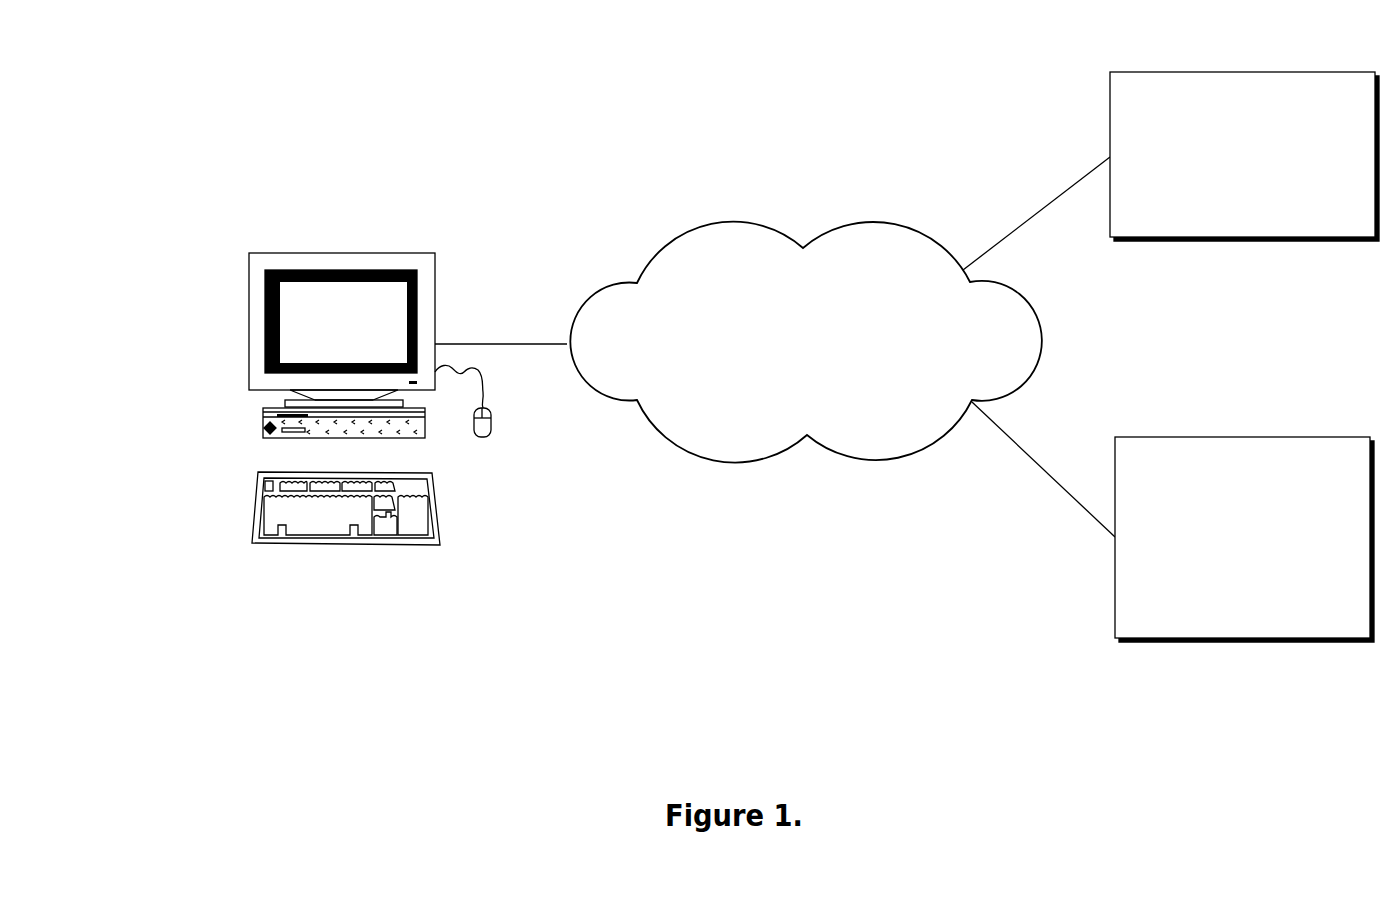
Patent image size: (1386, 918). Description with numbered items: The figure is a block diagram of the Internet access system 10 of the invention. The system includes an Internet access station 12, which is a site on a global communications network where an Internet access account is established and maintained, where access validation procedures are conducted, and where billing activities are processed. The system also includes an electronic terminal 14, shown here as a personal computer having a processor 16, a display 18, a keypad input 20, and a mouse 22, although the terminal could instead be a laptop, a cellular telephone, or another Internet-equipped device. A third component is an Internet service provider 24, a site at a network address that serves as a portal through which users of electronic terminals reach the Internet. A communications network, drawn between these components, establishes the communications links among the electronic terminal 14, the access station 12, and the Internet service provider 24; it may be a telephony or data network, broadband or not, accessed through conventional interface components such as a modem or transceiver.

The Internet access system 10 is at (802, 196).
The Internet access station 12 is at (1313, 436).
The electronic terminal 14 is at (178, 355).
The processor 16 is at (260, 427).
The display 18 is at (248, 272).
The keypad input 20 is at (253, 519).
The mouse 22 is at (494, 415).
The Internet service provider 24 is at (1328, 71).